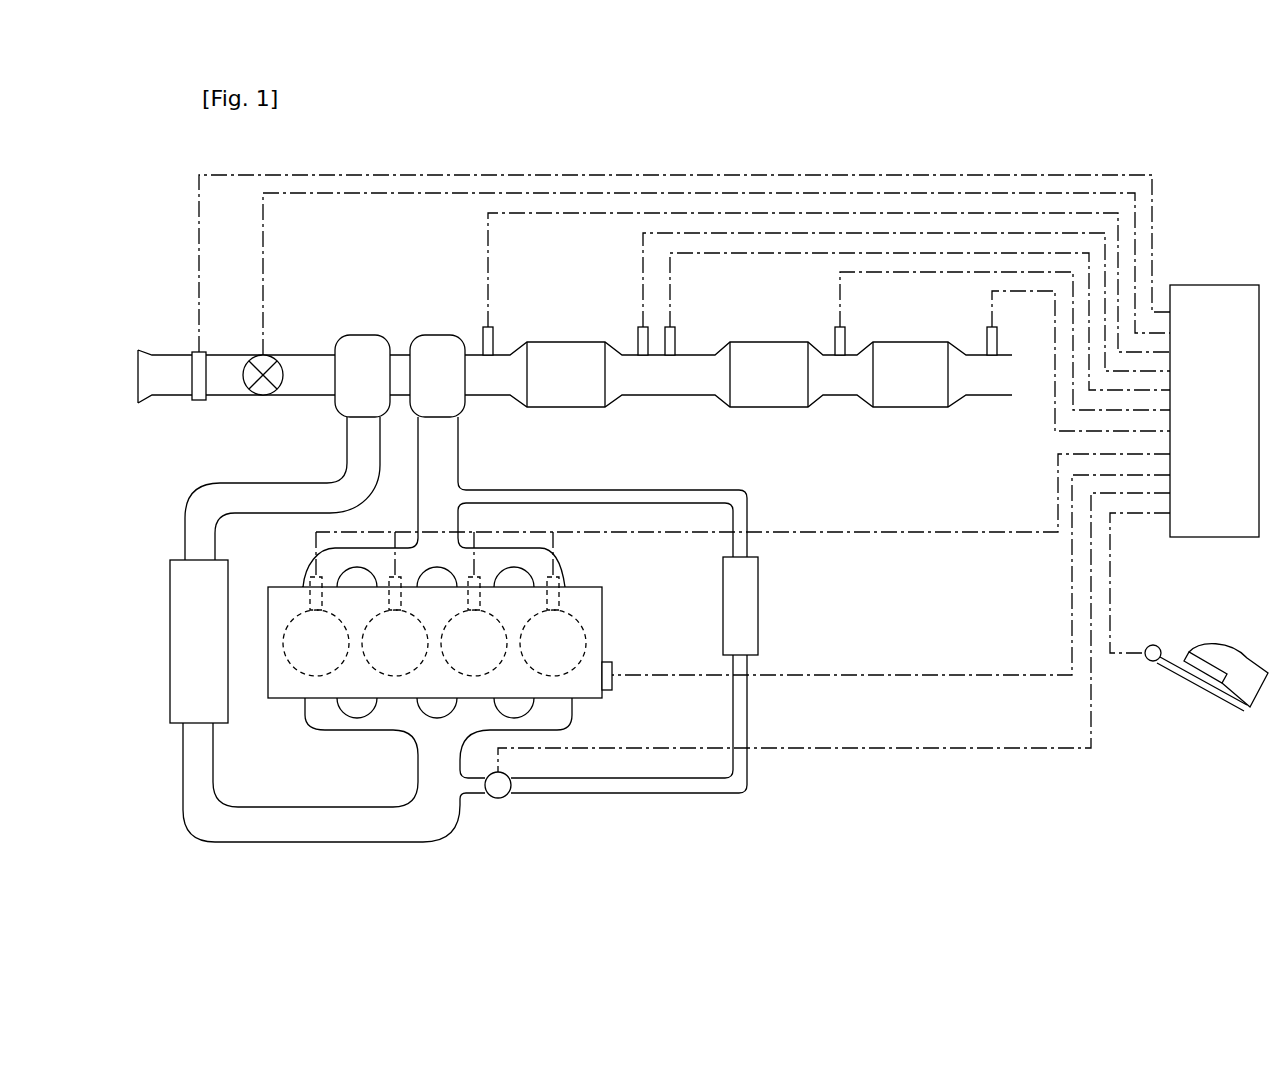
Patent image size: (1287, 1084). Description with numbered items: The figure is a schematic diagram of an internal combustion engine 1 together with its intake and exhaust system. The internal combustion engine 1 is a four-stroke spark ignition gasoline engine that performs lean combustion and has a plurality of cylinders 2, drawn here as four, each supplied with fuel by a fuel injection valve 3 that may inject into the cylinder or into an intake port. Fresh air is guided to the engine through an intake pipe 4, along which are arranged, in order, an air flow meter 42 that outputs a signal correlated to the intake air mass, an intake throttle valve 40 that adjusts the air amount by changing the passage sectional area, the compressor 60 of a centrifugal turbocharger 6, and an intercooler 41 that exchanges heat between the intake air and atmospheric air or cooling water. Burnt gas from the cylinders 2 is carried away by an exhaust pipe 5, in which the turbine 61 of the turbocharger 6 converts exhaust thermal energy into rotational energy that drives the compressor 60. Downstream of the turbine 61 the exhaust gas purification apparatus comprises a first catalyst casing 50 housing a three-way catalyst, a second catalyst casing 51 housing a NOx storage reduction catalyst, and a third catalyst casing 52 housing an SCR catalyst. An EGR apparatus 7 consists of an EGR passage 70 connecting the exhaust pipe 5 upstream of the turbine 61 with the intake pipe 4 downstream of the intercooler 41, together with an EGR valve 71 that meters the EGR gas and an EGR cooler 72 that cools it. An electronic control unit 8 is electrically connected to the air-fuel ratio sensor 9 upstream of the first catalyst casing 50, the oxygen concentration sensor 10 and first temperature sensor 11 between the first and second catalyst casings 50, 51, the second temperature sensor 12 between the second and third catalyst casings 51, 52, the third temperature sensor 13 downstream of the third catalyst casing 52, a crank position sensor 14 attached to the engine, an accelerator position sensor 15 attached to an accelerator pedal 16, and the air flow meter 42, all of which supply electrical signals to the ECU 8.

The internal combustion engine 1 is at (278, 587).
The cylinder 2 is at (300, 672).
The fuel injection valve 3 is at (602, 597).
The intake pipe 4 is at (302, 842).
The exhaust pipe 5 is at (458, 463).
The turbocharger 6 is at (406, 328).
The compressor 60 is at (352, 335).
The turbine 61 is at (433, 335).
The EGR apparatus 7 is at (669, 727).
The EGR passage 70 is at (745, 793).
The EGR valve 71 is at (505, 795).
The EGR cooler 72 is at (758, 608).
The electronic control unit 8 is at (1218, 537).
The air-fuel ratio sensor 9 is at (490, 327).
The oxygen concentration sensor 10 is at (642, 327).
The first temperature sensor 11 is at (673, 327).
The second temperature sensor 12 is at (842, 327).
The third temperature sensor 13 is at (990, 327).
The crank position sensor 14 is at (612, 688).
The accelerator position sensor 15 is at (1148, 660).
The accelerator pedal 16 is at (1212, 690).
The intake throttle valve 40 is at (263, 395).
The intercooler 41 is at (170, 620).
The air flow meter 42 is at (199, 400).
The first catalyst casing 50 is at (575, 407).
The second catalyst casing 51 is at (768, 407).
The third catalyst casing 52 is at (922, 407).